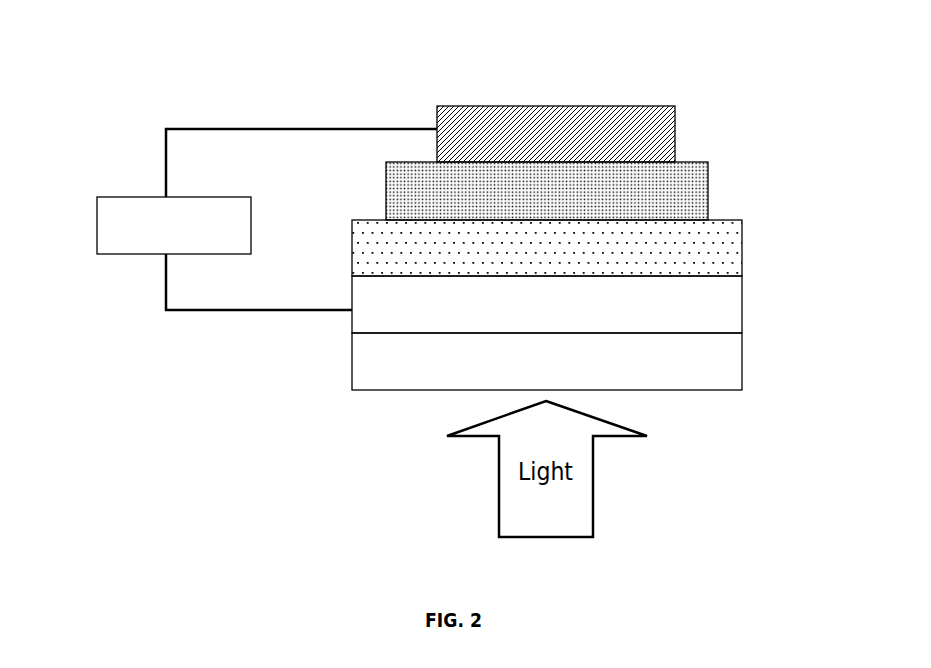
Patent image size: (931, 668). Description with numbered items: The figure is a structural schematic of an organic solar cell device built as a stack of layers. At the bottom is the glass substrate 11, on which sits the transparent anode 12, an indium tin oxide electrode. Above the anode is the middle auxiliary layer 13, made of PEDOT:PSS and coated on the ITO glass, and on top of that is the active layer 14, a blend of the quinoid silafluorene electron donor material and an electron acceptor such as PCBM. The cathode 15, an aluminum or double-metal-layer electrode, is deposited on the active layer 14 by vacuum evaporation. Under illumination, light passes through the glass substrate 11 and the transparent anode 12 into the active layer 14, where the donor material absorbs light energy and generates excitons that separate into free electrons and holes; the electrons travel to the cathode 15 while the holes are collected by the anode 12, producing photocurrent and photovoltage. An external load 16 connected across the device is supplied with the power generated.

The glass substrate 11 is at (715, 375).
The transparent anode 12 is at (712, 313).
The middle auxiliary layer 13 is at (717, 268).
The active layer 14 is at (683, 195).
The cathode 15 is at (665, 110).
The external load 16 is at (125, 210).